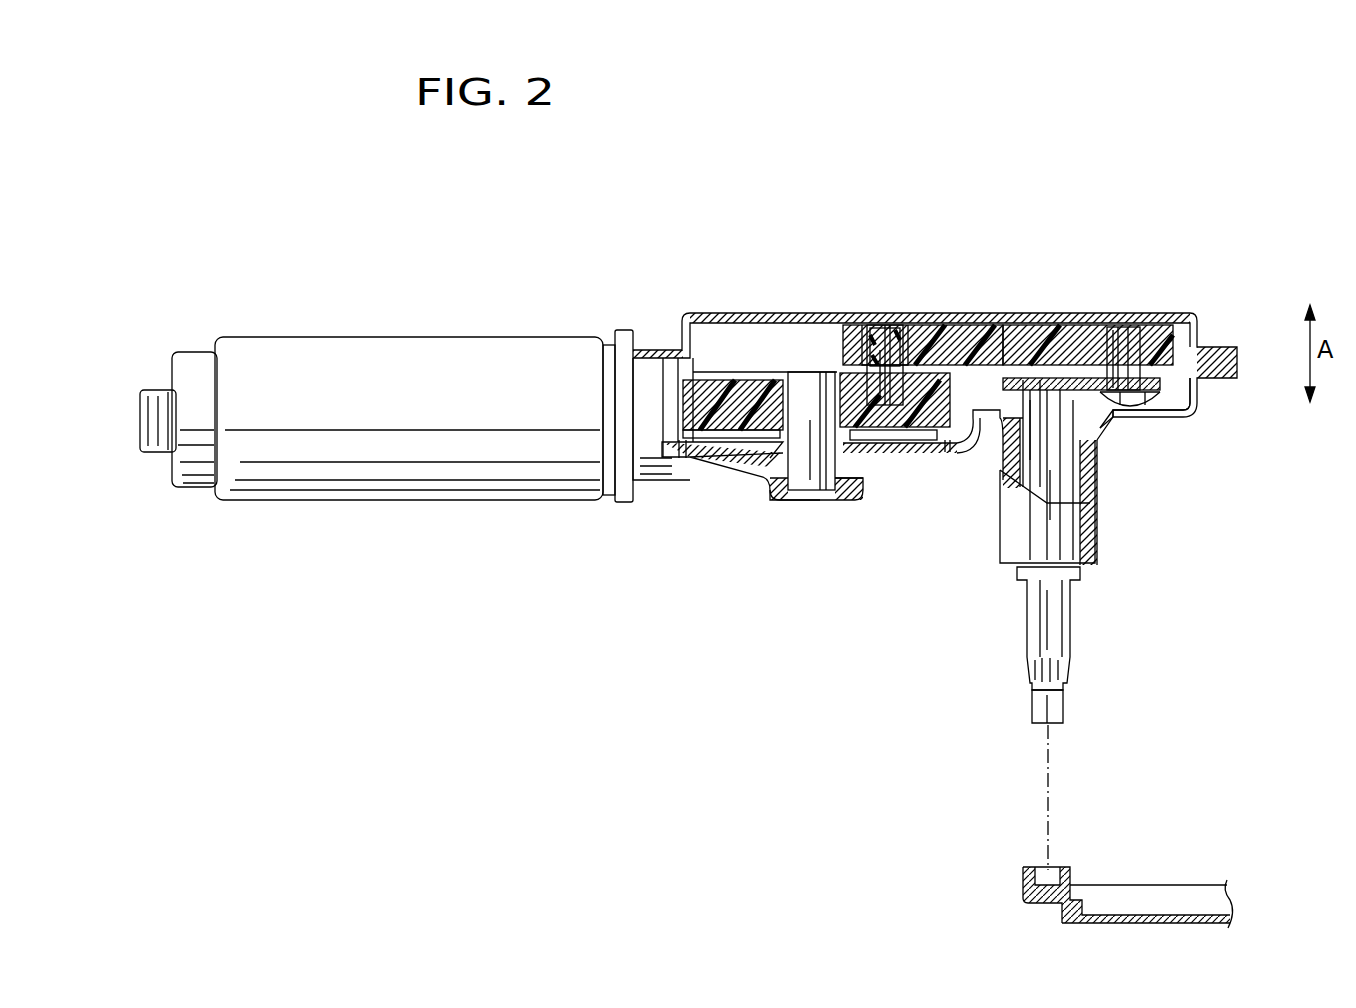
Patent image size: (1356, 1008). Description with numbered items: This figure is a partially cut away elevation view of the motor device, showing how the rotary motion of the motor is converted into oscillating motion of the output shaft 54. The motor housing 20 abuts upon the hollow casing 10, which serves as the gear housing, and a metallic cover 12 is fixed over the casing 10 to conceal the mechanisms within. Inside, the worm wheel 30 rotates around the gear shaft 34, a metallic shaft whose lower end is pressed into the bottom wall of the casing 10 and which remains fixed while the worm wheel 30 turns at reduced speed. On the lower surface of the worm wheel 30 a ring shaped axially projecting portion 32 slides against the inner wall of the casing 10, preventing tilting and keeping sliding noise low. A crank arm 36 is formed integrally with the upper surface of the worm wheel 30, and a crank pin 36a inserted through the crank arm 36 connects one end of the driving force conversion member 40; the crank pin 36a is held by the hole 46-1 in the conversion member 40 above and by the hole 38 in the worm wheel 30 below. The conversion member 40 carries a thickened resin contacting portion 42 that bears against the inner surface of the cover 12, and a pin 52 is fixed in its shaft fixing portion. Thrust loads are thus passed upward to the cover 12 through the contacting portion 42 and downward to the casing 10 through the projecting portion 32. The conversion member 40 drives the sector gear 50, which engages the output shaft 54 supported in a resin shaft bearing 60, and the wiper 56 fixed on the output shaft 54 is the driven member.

The hollow casing 10 is at (1203, 405).
The cover 12 is at (720, 315).
The motor housing 20 is at (300, 362).
The worm wheel 30 is at (728, 410).
The ring shaped axially projecting portion 32 is at (686, 458).
The gear shaft 34 is at (828, 490).
The crank arm 36 is at (778, 375).
The crank pin 36a is at (882, 330).
The hole 38 is at (888, 440).
The driving force conversion member 40 is at (937, 325).
The contacting portion 42 is at (1028, 330).
The hole 46-1 is at (827, 315).
The sector gear 50 is at (1167, 413).
The pin 52 is at (1133, 340).
The output shaft 54 is at (1030, 613).
The wiper 56 is at (1140, 900).
The shaft bearing 60 is at (1000, 470).